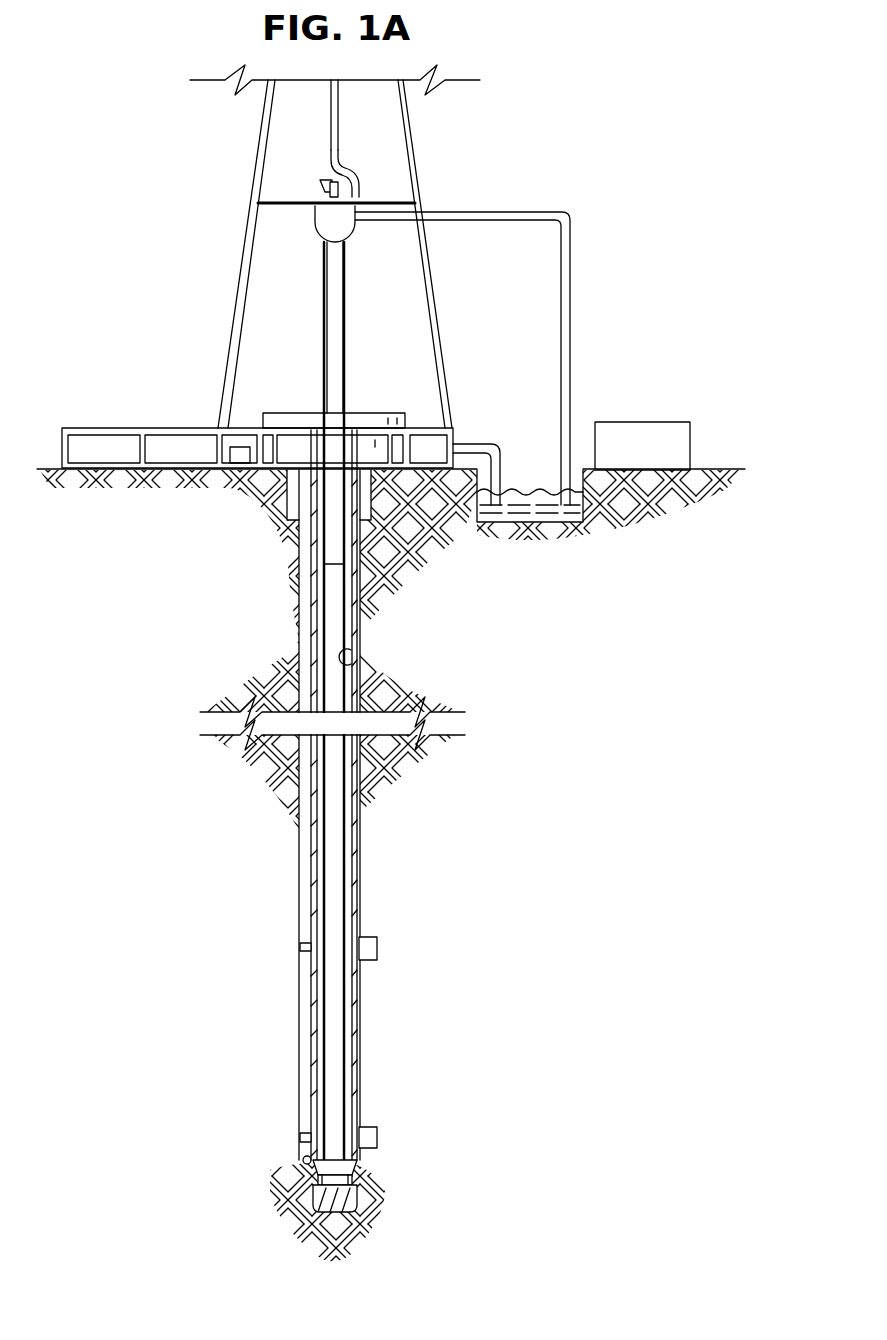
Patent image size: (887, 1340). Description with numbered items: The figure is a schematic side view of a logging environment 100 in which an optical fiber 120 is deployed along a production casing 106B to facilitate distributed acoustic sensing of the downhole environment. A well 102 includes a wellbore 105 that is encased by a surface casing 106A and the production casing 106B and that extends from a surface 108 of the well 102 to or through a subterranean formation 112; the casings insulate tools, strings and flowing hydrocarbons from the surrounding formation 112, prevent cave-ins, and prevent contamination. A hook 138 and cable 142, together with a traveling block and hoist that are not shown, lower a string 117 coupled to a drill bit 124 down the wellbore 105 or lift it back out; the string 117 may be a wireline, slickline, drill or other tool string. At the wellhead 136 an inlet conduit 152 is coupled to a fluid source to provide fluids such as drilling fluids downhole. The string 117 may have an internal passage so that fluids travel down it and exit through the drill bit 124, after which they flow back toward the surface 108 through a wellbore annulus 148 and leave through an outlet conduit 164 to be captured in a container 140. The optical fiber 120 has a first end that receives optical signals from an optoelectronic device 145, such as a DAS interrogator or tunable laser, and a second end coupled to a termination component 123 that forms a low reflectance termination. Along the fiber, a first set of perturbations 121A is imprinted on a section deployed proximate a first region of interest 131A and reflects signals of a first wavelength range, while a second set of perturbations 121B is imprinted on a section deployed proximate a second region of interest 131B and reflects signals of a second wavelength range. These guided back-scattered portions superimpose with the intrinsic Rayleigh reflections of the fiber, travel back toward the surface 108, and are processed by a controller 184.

The logging environment 100 is at (180, 231).
The well 102 is at (361, 403).
The wellbore 105 is at (355, 657).
The surface casing 106A is at (370, 495).
The production casing 106B is at (312, 992).
The surface 108 is at (709, 469).
The subterranean formation 112 is at (628, 933).
The string 117 is at (345, 872).
The optical fiber 120 is at (306, 1063).
The first set of perturbations 121A is at (300, 946).
The second set of perturbations 121B is at (300, 1137).
The termination component 123 is at (303, 1163).
The drill bit 124 is at (357, 1180).
The first region of interest 131A is at (377, 948).
The second region of interest 131B is at (377, 1145).
The wellhead 136 is at (312, 413).
The hook 138 is at (352, 180).
The container 140 is at (560, 522).
The cable 142 is at (331, 140).
The optoelectronic device 145 is at (240, 447).
The wellbore annulus 148 is at (348, 1078).
The inlet conduit 152 is at (552, 212).
The outlet conduit 164 is at (467, 444).
The controller 184 is at (642, 422).